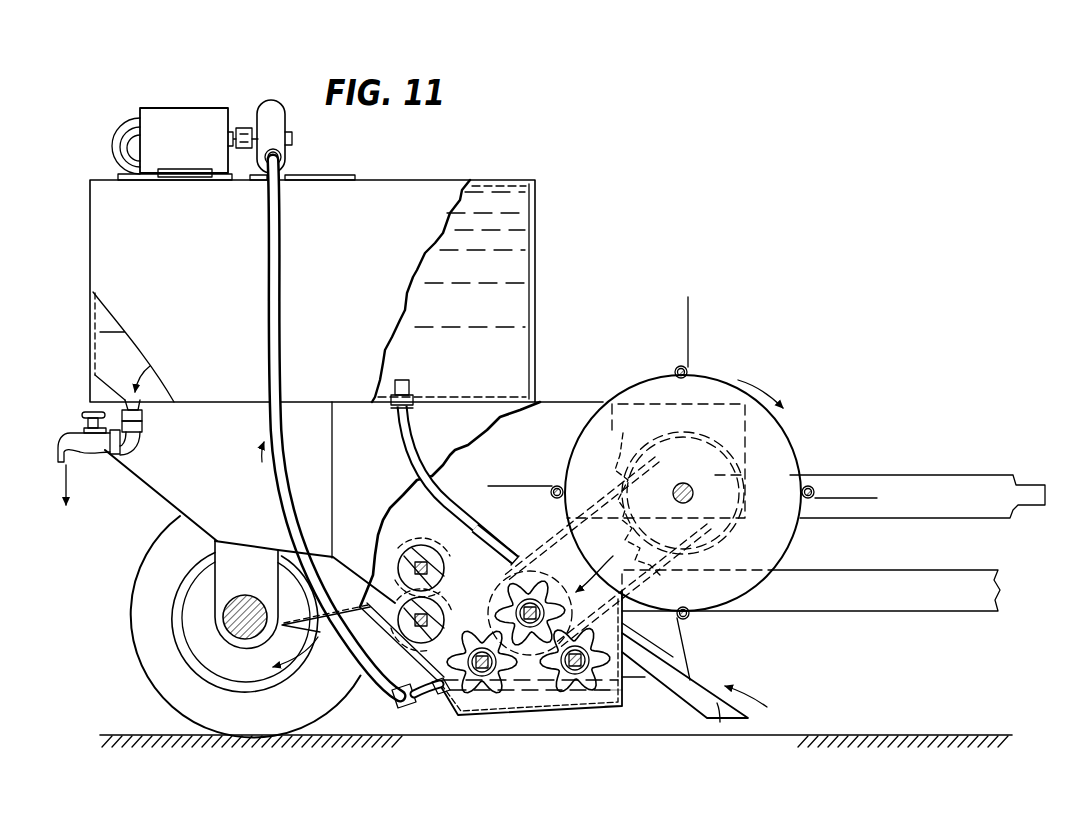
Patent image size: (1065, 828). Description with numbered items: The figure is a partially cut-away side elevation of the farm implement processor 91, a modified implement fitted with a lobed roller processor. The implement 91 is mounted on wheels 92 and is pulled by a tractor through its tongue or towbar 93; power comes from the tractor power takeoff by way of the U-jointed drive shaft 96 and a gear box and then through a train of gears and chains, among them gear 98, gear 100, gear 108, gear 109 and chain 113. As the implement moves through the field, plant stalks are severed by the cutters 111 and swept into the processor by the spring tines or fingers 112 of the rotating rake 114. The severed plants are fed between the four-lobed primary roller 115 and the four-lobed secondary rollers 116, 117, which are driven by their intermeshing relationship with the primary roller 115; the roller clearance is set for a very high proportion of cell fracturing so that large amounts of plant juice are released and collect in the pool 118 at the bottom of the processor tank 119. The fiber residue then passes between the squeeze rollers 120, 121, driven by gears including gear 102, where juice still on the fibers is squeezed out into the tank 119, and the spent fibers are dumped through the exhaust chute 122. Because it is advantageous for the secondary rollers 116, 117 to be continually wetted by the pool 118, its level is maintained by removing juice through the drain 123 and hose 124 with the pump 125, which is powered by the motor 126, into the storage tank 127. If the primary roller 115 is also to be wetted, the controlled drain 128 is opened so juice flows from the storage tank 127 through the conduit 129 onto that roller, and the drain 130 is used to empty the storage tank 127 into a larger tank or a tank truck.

The farm implement processor 91 is at (632, 268).
The wheels 92 is at (131, 581).
The tongue or towbar 93 is at (897, 613).
The U-jointed drive shaft 96 is at (1026, 486).
The gear 98 is at (614, 488).
The gear 100 is at (616, 566).
The gear 102 is at (485, 551).
The gear 108 is at (616, 450).
The gear 109 is at (458, 547).
The cutters 111 is at (742, 712).
The spring tines or fingers 112 is at (688, 306).
The chain 113 is at (568, 575).
The rotating rake 114 is at (791, 438).
The four-lobed primary roller 115 is at (552, 548).
The four-lobed secondary roller 116 is at (594, 706).
The four-lobed secondary roller 117 is at (493, 712).
The pool 118 is at (549, 712).
The processor tank 119 is at (629, 712).
The squeeze roller 120 is at (379, 525).
The squeeze roller 121 is at (395, 706).
The exhaust chute 122 is at (356, 623).
The drain 123 is at (434, 708).
The hose 124 is at (285, 228).
The pump 125 is at (287, 117).
The motor 126 is at (212, 108).
The storage tank 127 is at (432, 177).
The controlled drain 128 is at (413, 391).
The conduit 129 is at (399, 442).
The drain 130 is at (94, 465).